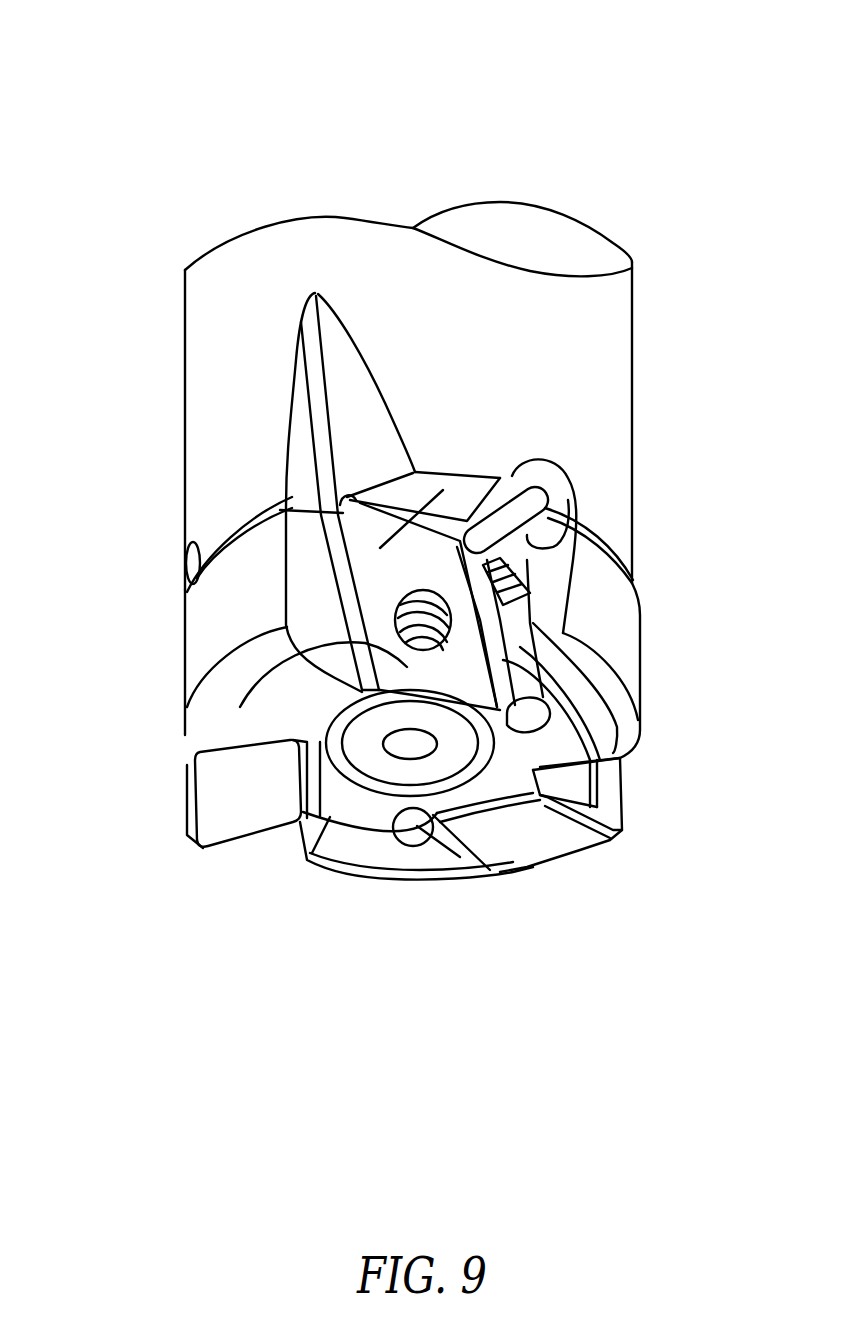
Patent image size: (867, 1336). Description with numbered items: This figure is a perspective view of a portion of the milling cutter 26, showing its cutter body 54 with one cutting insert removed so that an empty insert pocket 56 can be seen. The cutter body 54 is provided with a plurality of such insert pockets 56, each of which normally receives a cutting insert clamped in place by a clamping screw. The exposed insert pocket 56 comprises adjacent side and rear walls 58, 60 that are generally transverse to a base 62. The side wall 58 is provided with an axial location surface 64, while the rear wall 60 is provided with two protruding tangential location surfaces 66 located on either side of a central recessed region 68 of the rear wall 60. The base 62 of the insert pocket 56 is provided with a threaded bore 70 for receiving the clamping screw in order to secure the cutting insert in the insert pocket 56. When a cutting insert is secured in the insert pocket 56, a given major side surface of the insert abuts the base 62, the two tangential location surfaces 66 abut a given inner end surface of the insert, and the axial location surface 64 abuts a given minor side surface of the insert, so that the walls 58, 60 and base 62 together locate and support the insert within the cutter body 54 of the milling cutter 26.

The milling cutter 26 is at (661, 83).
The cutter body 54 is at (595, 370).
The insert pocket 56 is at (459, 690).
The side wall 58 is at (370, 560).
The rear wall 60 is at (505, 685).
The base 62 is at (190, 706).
The axial location surface 64 is at (407, 492).
The tangential location surface 66 is at (500, 560).
The central recessed region 68 is at (540, 605).
The threaded bore 70 is at (430, 648).